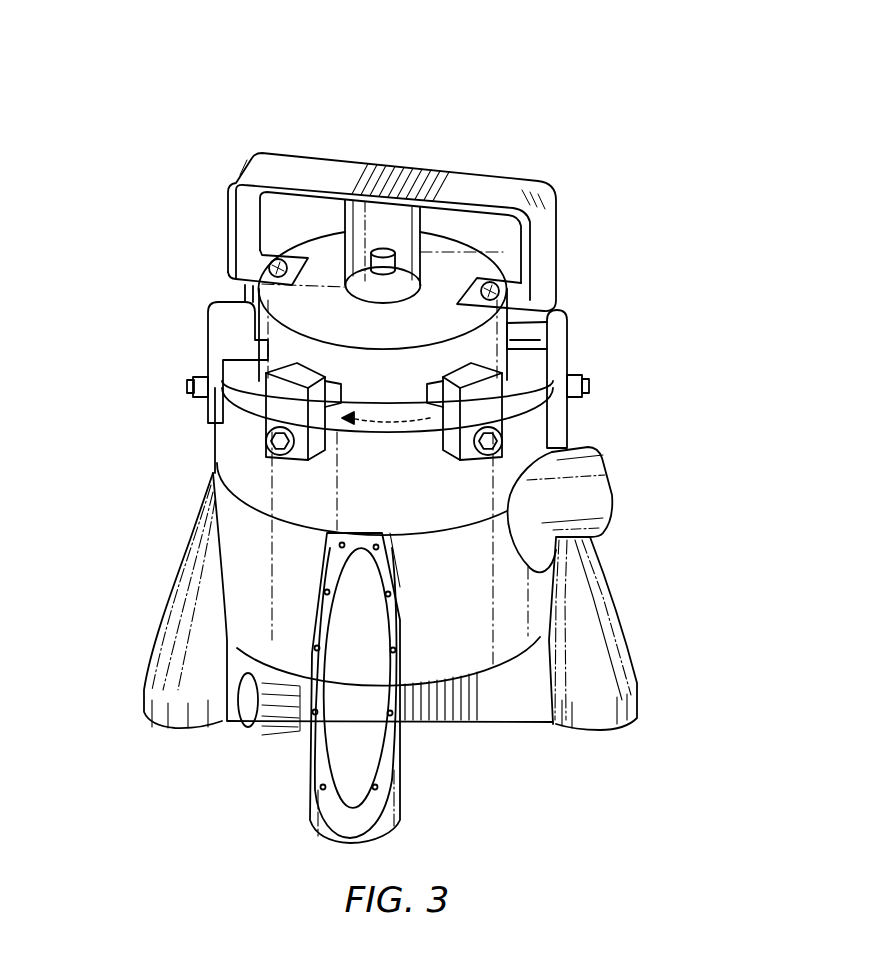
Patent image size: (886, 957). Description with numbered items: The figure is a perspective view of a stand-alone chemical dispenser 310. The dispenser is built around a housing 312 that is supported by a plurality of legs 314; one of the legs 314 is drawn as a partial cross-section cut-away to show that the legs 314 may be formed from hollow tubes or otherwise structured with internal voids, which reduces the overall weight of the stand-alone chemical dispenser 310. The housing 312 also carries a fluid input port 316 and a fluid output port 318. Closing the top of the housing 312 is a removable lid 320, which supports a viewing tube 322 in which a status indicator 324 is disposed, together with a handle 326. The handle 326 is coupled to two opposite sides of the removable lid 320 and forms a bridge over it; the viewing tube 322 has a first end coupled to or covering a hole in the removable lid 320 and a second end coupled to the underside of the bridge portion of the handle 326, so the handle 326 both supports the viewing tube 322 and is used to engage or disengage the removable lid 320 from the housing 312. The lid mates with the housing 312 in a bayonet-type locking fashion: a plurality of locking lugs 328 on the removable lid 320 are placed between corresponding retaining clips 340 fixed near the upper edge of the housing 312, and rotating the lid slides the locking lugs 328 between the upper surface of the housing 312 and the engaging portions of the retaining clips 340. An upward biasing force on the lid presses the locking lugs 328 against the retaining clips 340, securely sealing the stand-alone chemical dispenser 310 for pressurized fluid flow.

The stand-alone chemical dispenser 310 is at (205, 88).
The housing 312 is at (562, 431).
The legs 314 is at (148, 672).
The fluid input port 316 is at (612, 496).
The fluid output port 318 is at (243, 728).
The removable lid 320 is at (445, 258).
The viewing tube 322 is at (344, 216).
The status indicator 324 is at (383, 252).
The handle 326 is at (544, 266).
The locking lugs 328 is at (237, 358).
The retaining clips 340 is at (210, 412).